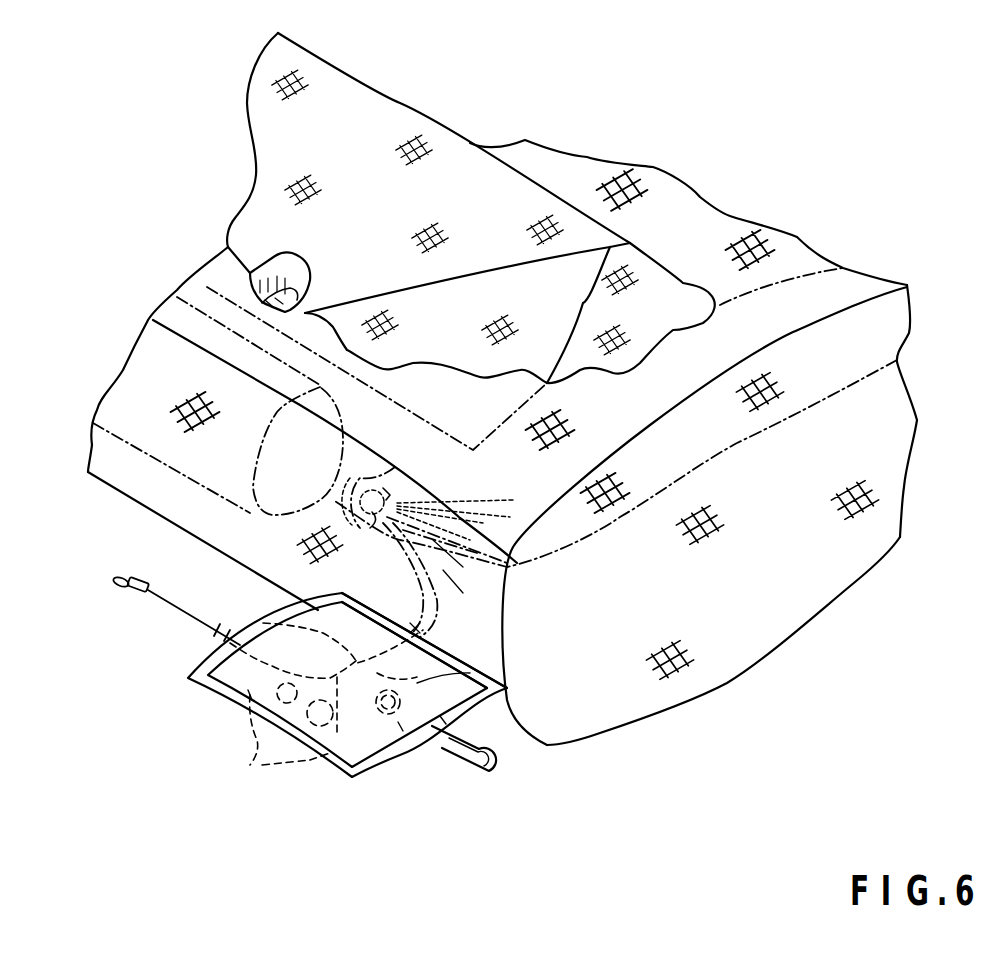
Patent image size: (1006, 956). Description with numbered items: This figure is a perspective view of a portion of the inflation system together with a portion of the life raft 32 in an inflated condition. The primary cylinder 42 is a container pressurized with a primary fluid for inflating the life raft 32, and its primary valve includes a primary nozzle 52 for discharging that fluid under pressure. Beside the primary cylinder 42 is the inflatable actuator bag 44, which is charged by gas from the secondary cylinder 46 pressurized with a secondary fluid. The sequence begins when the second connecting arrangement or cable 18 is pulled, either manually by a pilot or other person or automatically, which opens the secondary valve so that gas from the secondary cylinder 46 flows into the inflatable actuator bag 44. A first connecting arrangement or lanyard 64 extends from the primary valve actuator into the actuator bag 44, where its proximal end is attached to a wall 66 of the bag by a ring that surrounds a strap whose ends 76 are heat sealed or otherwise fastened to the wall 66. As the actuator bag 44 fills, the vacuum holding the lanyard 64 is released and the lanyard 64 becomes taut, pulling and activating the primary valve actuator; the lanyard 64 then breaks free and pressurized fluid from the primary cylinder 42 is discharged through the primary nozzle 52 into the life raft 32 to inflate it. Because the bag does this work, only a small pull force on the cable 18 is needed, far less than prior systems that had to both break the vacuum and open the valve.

The second connecting arrangement or cable 18 is at (150, 588).
The inflatable life raft 32 is at (773, 631).
The primary cylinder 42 is at (127, 402).
The inflatable actuator bag 44 is at (352, 777).
The secondary cylinder 46 is at (463, 763).
The primary nozzle 52 is at (395, 467).
The first connecting arrangement or lanyard 64 is at (270, 620).
The wall of the inflatable actuator bag 66 is at (450, 650).
The ends of the strap 76 is at (252, 764).